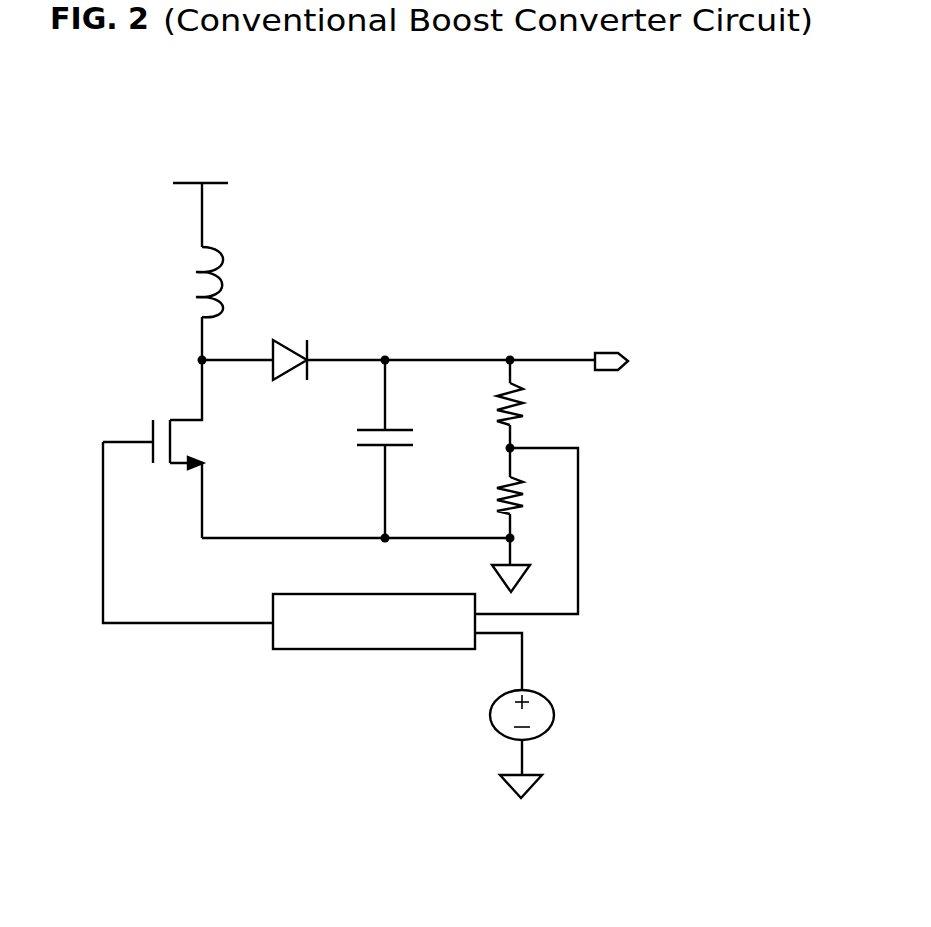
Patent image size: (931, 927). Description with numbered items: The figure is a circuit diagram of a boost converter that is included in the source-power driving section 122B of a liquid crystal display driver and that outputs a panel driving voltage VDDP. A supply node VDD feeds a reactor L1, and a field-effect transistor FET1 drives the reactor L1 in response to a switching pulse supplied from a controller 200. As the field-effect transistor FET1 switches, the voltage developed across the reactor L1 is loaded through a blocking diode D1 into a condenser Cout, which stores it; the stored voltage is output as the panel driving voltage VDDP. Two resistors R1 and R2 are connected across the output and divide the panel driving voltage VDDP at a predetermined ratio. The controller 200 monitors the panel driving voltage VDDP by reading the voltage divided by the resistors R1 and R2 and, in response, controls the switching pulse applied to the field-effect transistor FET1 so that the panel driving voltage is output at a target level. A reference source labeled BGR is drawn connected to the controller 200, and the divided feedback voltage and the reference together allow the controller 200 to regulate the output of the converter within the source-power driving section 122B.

The source-power driving section 122B is at (708, 109).
The controller 200 is at (347, 649).
The supply voltage node VDD is at (200, 200).
The reactor L1 is at (229, 303).
The blocking diode D1 is at (291, 379).
The panel driving voltage VDDP is at (649, 362).
The field-effect transistor FET1 is at (186, 449).
The condenser Cout is at (420, 449).
The resistor R1 is at (531, 418).
The resistor R2 is at (531, 521).
The band gap reference voltage source BGR is at (547, 715).